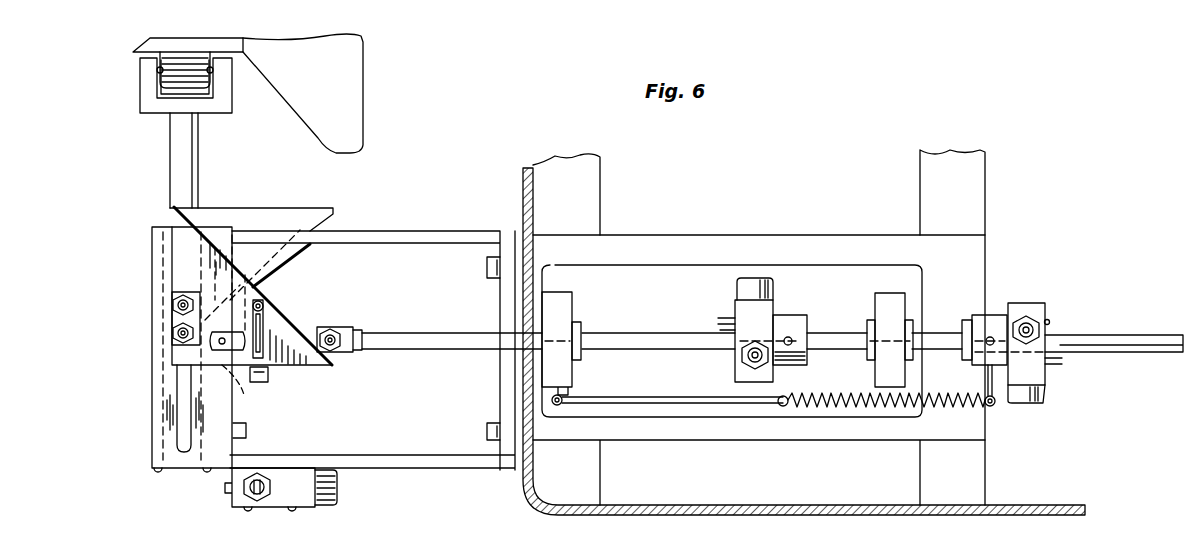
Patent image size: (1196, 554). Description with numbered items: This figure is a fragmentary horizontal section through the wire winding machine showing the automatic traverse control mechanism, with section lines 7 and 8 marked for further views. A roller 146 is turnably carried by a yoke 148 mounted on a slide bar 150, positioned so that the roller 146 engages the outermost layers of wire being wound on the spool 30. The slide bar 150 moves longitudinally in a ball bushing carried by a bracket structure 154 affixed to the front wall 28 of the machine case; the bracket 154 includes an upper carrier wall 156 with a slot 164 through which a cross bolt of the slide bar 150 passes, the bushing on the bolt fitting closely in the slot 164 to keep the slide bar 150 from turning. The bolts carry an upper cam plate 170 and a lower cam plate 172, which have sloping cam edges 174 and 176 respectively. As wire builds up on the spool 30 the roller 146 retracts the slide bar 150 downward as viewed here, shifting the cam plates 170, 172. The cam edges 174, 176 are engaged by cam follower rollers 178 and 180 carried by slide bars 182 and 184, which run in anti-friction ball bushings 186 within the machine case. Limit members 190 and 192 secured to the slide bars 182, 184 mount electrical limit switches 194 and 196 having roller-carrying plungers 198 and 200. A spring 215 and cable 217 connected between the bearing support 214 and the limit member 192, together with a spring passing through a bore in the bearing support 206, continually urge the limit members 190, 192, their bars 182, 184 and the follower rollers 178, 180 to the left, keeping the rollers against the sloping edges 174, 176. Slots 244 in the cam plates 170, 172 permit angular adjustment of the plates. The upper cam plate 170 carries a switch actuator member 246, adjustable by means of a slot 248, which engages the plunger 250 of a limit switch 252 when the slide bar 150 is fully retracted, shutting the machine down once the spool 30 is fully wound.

The front wall 28 is at (526, 186).
The spool 30 is at (340, 93).
The roller 146 is at (155, 85).
The yoke 148 is at (148, 103).
The slide bar 150 is at (186, 149).
The bracket structure 154 is at (476, 222).
The upper carrier wall 156 is at (172, 410).
The slot 164 is at (185, 432).
The upper cam plate 170 is at (290, 320).
The lower cam plate 172 is at (284, 210).
The sloping cam edge 174 is at (288, 304).
The sloping cam edge 176 is at (310, 262).
The cam follower roller 178 is at (342, 330).
The cam follower roller 180 is at (222, 380).
The slide bar 182 is at (461, 333).
The slide bar 184 is at (328, 332).
The ball bushing 186 is at (580, 330).
The limit member 190 is at (800, 318).
The limit member 192 is at (996, 314).
The limit switch 194 is at (740, 312).
The limit switch 196 is at (1040, 376).
The plunger 198 is at (748, 360).
The plunger 200 is at (1048, 321).
The bearing support 206 is at (892, 282).
The bearing support 214 is at (563, 300).
The spring 215 is at (846, 398).
The cable 217 is at (638, 398).
The slots 244 is at (205, 300).
The switch actuator member 246 is at (266, 380).
The slot 248 is at (262, 350).
The plunger 250 is at (259, 500).
The limit switch 252 is at (300, 496).
The section line 7 is at (160, 343).
The section line 8 is at (180, 196).